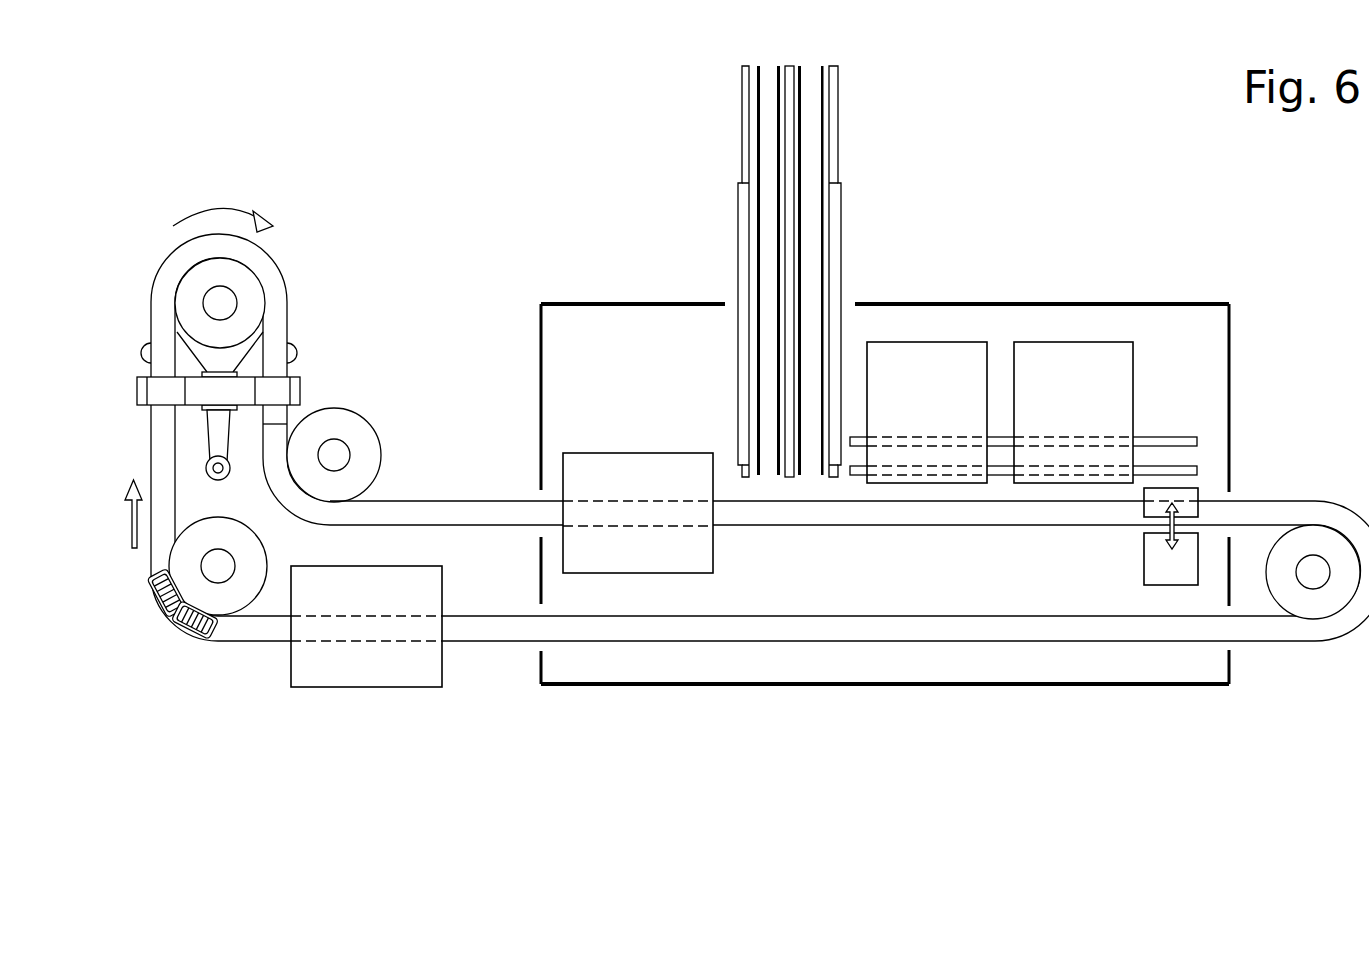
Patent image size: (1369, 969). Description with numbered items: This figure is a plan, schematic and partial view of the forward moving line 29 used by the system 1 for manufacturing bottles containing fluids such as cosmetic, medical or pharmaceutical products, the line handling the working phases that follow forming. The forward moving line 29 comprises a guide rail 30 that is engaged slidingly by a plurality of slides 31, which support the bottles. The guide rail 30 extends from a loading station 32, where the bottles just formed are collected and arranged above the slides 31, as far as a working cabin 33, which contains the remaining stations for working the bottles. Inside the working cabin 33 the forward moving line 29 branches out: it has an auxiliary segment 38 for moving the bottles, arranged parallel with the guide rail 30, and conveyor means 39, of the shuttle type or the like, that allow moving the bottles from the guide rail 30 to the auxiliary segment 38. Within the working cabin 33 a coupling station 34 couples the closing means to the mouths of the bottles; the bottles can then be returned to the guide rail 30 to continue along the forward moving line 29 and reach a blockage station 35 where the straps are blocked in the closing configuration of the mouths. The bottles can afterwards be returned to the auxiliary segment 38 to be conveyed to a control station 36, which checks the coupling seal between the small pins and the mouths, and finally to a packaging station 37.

The system 1 is at (472, 212).
The forward moving line 29 is at (143, 452).
The guide rail 30 is at (416, 512).
The slides 31 is at (152, 594).
The loading station 32 is at (362, 667).
The working cabin 33 is at (708, 684).
The coupling station 34 is at (546, 441).
The blockage station 35 is at (1073, 322).
The control station 36 is at (926, 322).
The packaging station 37 is at (853, 131).
The auxiliary segment 38 is at (1197, 472).
The conveyor means 39 is at (1158, 575).